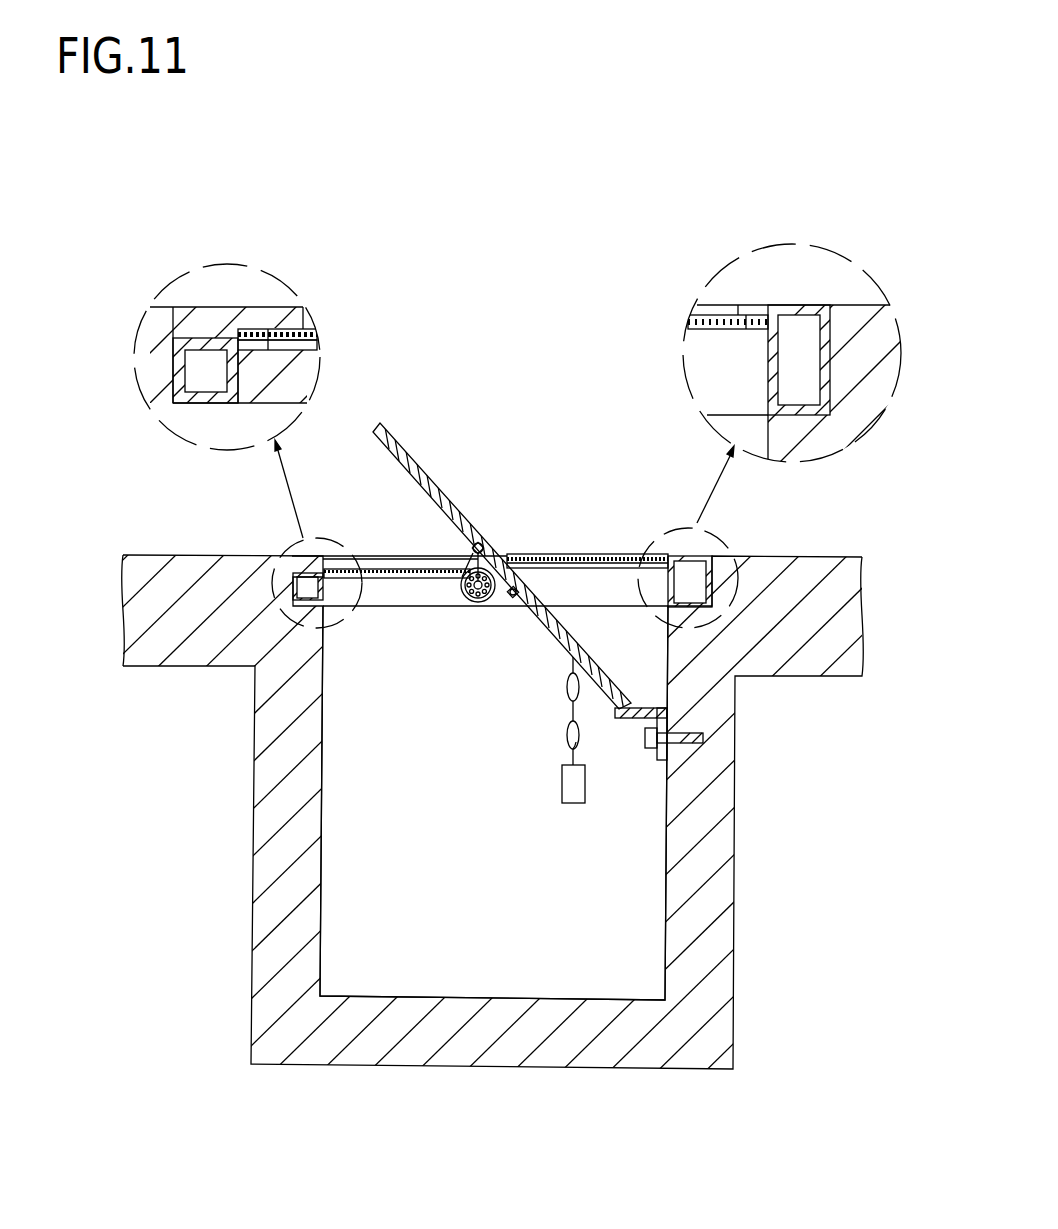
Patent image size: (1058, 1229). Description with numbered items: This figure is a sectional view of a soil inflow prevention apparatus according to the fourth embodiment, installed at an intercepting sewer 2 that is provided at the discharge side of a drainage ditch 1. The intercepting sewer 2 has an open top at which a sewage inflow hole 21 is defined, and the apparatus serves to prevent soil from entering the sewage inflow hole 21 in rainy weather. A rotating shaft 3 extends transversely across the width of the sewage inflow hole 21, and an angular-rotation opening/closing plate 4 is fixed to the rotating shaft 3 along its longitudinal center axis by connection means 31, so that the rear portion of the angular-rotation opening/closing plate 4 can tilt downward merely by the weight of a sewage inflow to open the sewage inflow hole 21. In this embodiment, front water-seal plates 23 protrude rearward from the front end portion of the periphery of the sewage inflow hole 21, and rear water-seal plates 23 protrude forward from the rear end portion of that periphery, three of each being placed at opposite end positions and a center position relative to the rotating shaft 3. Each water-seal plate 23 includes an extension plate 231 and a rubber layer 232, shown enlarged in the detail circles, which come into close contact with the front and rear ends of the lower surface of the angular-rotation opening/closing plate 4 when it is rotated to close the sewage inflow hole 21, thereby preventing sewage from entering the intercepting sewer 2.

The drainage ditch 1 is at (833, 558).
The intercepting sewer 2 is at (622, 922).
The sewage inflow hole 21 is at (582, 572).
The water-seal plate 23 is at (378, 558).
The extension plate 231 is at (256, 348).
The rubber layer 232 is at (257, 347).
The rotating shaft 3 is at (478, 547).
The connection means 31 is at (448, 601).
The angular-rotation opening/closing plate 4 is at (413, 467).